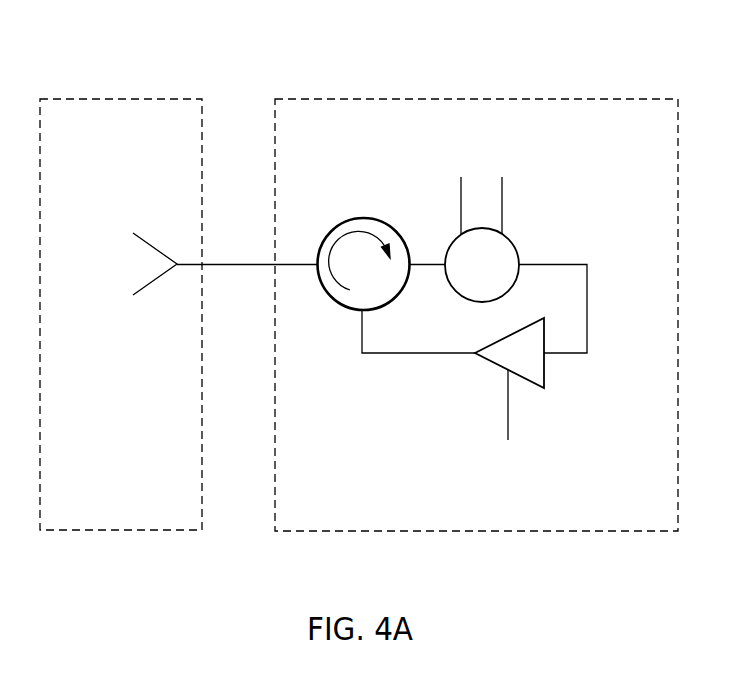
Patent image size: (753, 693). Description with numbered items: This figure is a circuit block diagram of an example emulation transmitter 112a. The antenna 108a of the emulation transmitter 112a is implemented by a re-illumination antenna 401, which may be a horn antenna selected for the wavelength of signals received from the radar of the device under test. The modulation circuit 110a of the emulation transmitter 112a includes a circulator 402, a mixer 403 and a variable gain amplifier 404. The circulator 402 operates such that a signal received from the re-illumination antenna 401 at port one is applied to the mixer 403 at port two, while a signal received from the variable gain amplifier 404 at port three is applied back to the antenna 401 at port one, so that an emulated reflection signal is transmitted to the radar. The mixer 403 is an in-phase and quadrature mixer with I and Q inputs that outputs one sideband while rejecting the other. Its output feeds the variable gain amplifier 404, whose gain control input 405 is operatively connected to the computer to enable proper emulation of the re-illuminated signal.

The emulation transmitter 112a is at (352, 22).
The antenna 108a is at (132, 97).
The modulation circuit 110a is at (477, 100).
The re-illumination antenna 401 is at (148, 238).
The circulator 402 is at (346, 218).
The mixer 403 is at (515, 237).
The variable gain amplifier 404 is at (547, 377).
The gain control input 405 is at (547, 470).